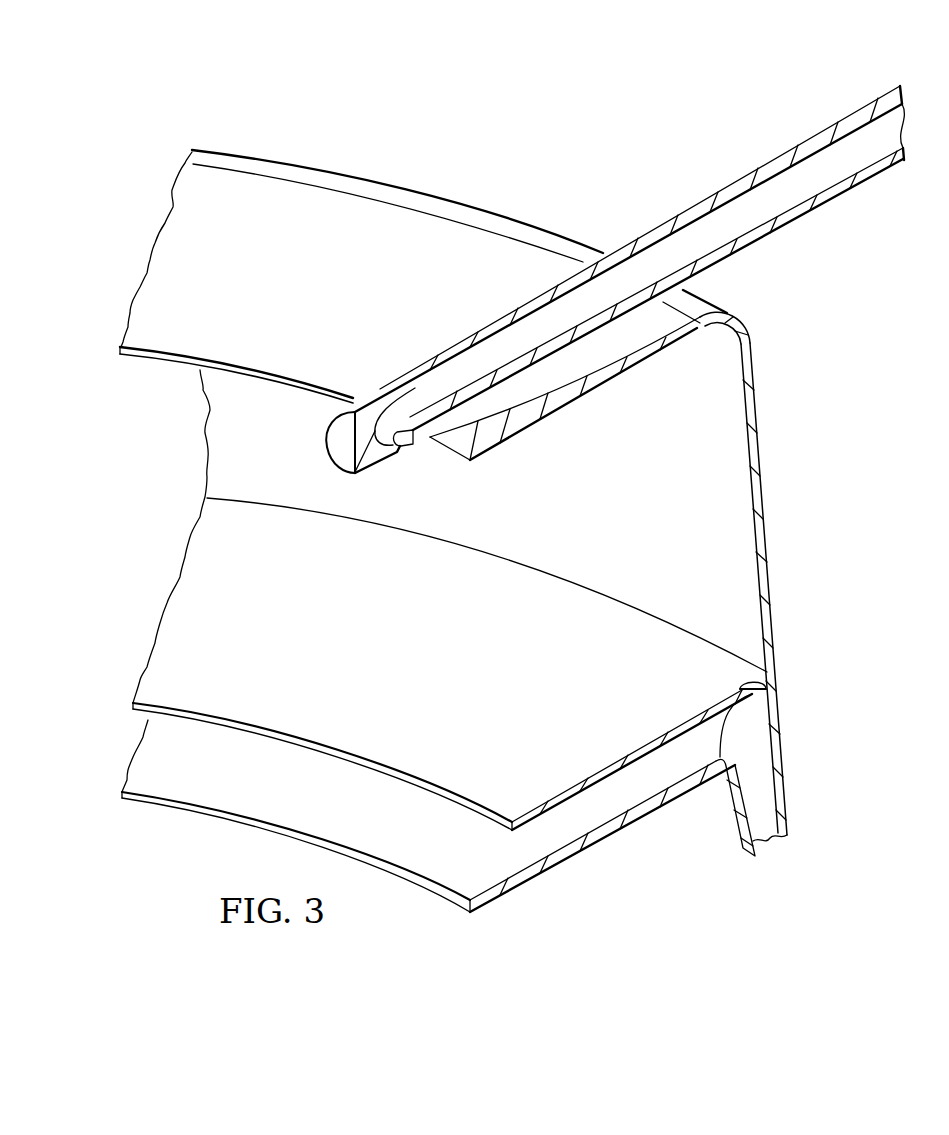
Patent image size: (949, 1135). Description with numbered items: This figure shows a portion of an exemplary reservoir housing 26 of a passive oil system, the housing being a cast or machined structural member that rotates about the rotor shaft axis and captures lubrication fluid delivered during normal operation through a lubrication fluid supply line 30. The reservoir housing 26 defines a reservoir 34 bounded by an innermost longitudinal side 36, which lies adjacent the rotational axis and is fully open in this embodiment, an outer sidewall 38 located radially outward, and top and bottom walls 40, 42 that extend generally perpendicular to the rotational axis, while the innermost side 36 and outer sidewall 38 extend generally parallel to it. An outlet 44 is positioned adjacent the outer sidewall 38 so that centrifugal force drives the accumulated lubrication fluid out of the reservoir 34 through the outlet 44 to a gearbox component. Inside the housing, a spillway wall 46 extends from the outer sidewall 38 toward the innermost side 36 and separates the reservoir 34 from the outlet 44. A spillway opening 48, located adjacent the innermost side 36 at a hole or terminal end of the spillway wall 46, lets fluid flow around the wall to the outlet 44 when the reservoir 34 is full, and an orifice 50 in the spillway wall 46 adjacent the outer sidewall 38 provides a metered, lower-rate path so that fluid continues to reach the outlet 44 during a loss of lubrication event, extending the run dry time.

The reservoir housing 26 is at (628, 576).
The lubrication fluid supply line 30 is at (680, 214).
The reservoir 34 is at (727, 449).
The innermost longitudinal side 36 is at (245, 737).
The outer sidewall 38 is at (765, 535).
The top wall 40 is at (428, 227).
The bottom wall 42 is at (592, 840).
The outlet 44 is at (763, 803).
The spillway wall 46 is at (558, 595).
The spillway opening 48 is at (437, 812).
The orifice 50 is at (752, 670).